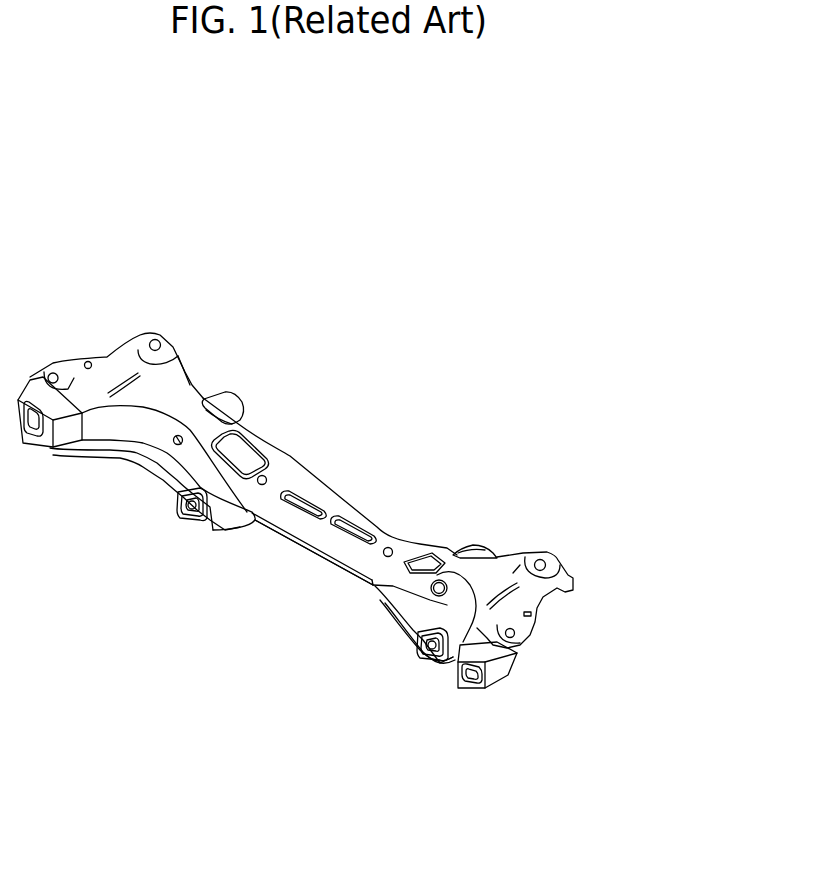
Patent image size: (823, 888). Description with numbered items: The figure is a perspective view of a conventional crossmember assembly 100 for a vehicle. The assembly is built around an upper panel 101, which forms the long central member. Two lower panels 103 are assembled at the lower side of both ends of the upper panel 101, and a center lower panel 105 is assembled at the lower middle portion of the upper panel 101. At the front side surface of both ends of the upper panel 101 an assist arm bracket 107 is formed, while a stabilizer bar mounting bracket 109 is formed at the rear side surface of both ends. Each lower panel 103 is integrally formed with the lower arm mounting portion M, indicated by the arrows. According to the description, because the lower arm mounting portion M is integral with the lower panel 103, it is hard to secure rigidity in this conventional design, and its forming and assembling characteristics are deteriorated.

The crossmember assembly 100 is at (412, 407).
The upper panel 101 is at (330, 509).
The lower panel 103 is at (163, 480).
The center lower panel 105 is at (320, 550).
The assist arm bracket 107 is at (53, 437).
The stabilizer bar mounting bracket 109 is at (233, 397).
The lower arm mounting portion M is at (188, 533).